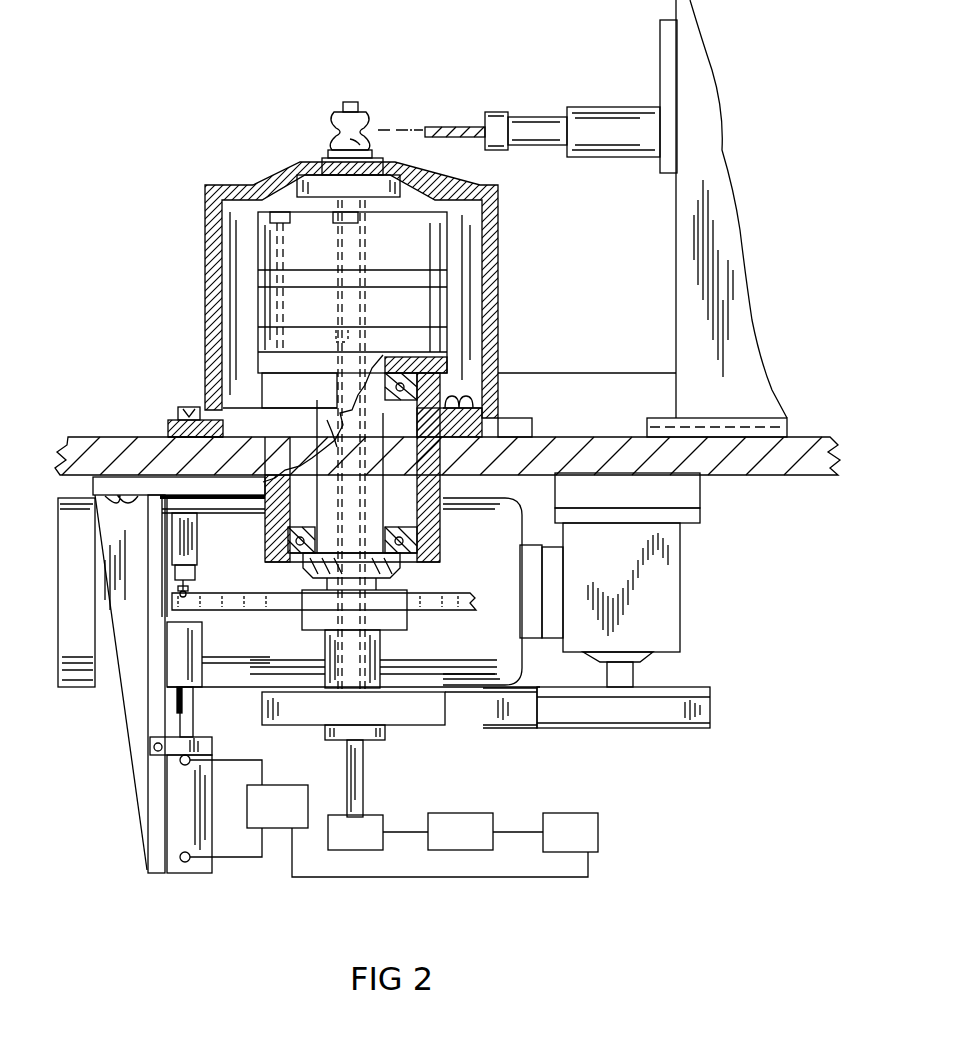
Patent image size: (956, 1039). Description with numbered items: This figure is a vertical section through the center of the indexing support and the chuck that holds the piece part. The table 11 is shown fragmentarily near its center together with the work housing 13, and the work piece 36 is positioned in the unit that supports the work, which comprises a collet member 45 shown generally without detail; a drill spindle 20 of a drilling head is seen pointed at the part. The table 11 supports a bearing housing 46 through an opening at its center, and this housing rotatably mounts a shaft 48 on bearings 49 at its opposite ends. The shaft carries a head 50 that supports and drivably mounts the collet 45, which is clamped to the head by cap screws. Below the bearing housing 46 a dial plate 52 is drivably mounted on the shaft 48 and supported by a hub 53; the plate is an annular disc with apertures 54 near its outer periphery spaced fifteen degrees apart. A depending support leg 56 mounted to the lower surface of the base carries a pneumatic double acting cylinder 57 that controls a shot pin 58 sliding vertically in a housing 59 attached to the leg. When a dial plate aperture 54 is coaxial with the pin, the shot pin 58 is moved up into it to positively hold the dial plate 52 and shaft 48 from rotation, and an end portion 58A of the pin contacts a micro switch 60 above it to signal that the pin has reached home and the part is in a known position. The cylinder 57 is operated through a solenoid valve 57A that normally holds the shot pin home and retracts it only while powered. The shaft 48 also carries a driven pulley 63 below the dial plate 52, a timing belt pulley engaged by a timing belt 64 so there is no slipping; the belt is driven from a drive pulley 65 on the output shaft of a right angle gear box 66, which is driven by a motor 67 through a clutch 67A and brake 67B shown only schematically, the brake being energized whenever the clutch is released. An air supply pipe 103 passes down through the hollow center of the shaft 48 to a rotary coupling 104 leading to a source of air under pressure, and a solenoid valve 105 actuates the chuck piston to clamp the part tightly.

The table 11 is at (807, 443).
The work housing 13 is at (205, 303).
The drill spindle 20 is at (542, 117).
The work piece 36 is at (350, 102).
The collet member 45 is at (405, 243).
The bearing housing 46 is at (441, 538).
The shaft 48 is at (367, 437).
The bearings 49 is at (405, 512).
The head 50 is at (342, 336).
The dial plate 52 is at (435, 595).
The hub 53 is at (300, 622).
The apertures 54 is at (210, 622).
The depending support leg 56 is at (158, 795).
The pneumatic double acting cylinder 57 is at (180, 868).
The solenoid valve 57A is at (278, 820).
The shot pin 58 is at (222, 714).
The end portion of shot pin 58A is at (189, 594).
The housing 59 is at (180, 655).
The micro switch 60 is at (178, 528).
The driven pulley 63 is at (328, 730).
The timing belt 64 is at (527, 712).
The drive pulley 65 is at (693, 688).
The right angle gear box 66 is at (658, 587).
The motor 67 is at (497, 652).
The clutch 67A is at (535, 550).
The brake 67B is at (562, 593).
The air supply pipe 103 is at (355, 765).
The rotary coupling 104 is at (340, 824).
The solenoid valve 105 is at (467, 830).